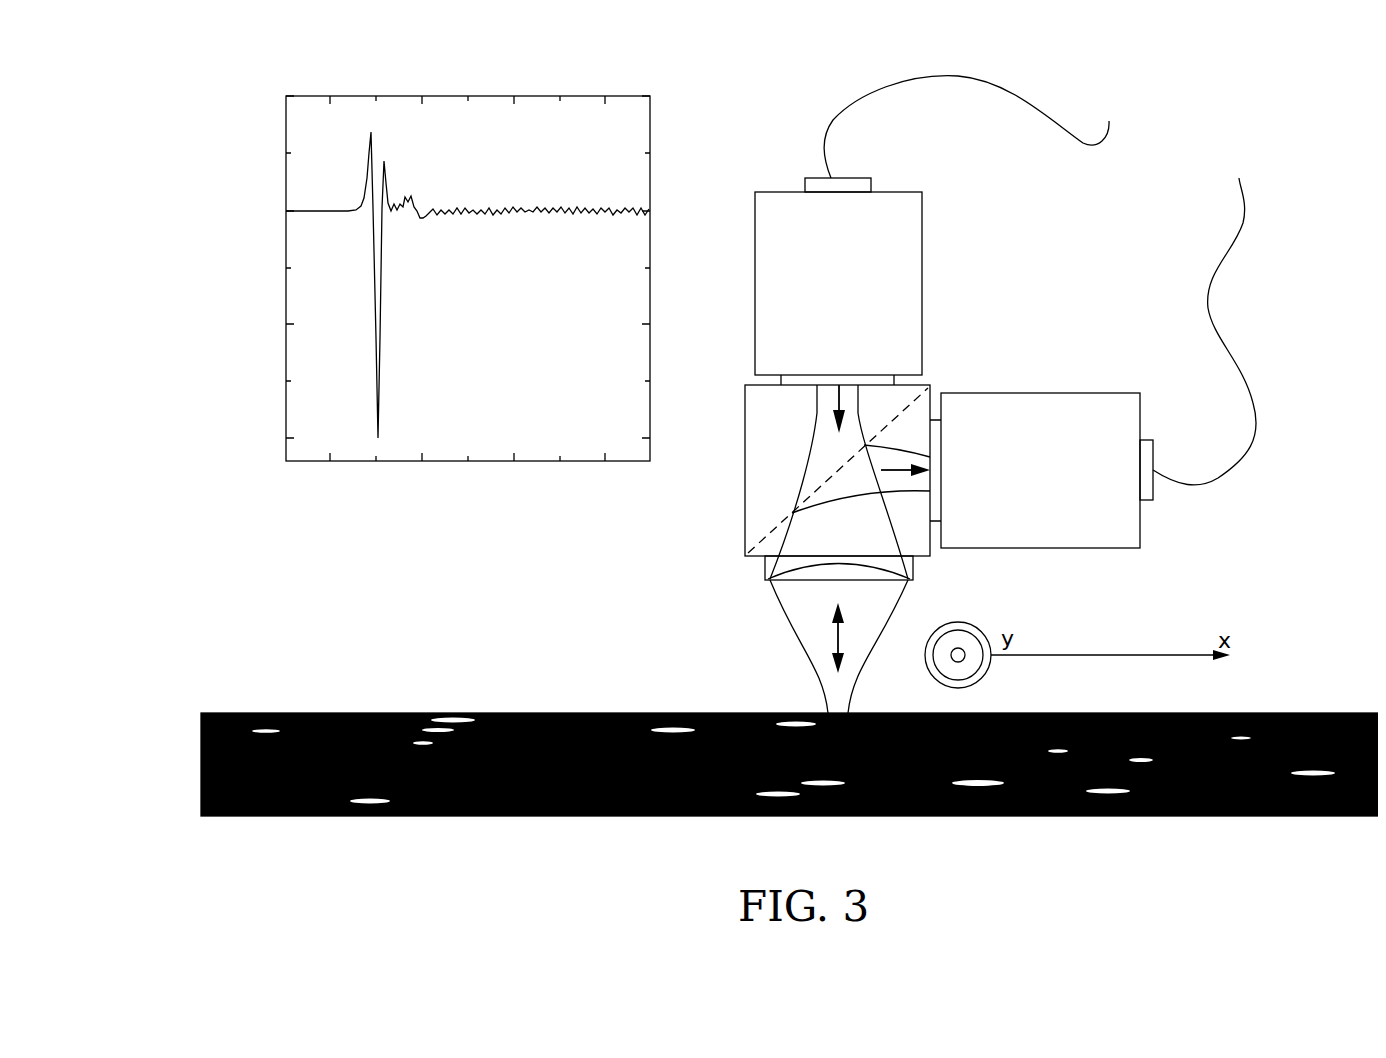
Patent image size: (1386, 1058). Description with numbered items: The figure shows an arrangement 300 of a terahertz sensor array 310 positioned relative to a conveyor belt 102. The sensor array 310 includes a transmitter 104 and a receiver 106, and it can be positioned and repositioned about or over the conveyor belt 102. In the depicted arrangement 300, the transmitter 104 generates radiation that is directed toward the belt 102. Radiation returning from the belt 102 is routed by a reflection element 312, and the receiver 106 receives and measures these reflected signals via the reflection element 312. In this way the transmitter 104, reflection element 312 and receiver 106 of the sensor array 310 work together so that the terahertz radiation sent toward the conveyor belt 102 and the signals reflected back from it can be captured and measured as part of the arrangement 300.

The arrangement 300 is at (200, 70).
The transmitter 104 is at (778, 200).
The receiver 106 is at (1038, 405).
The terahertz sensor array 310 is at (1262, 130).
The reflection element 312 is at (718, 533).
The conveyor belt 102 is at (418, 705).